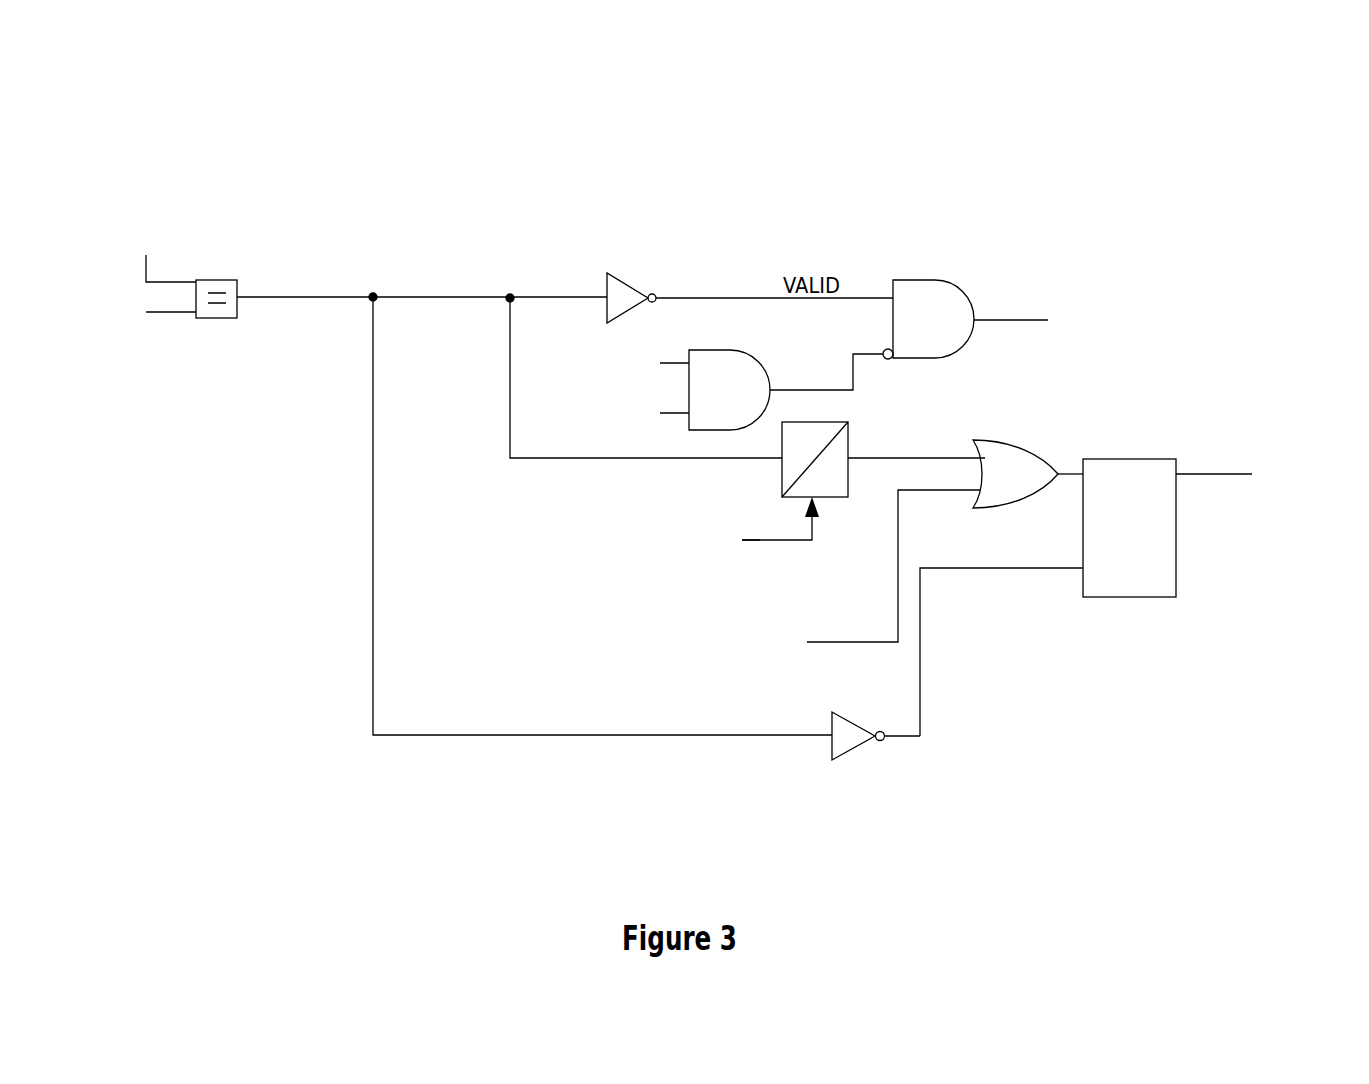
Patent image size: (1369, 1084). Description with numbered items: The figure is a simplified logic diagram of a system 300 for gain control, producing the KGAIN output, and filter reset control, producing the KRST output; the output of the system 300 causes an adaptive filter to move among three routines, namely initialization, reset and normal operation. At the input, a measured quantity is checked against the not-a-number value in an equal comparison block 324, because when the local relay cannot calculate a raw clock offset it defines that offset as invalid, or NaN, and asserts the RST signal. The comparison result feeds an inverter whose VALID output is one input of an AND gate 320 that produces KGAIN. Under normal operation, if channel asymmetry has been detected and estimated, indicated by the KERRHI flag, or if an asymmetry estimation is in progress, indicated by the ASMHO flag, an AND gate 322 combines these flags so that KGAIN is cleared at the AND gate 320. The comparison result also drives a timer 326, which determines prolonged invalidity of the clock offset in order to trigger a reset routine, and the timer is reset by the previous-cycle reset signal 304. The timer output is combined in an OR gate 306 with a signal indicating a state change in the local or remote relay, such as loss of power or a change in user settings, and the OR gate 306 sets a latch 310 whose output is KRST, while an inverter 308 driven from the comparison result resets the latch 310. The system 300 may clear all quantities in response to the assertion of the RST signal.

The system 300 is at (196, 124).
The previous reset signal RST(k-1) 304 is at (712, 555).
The OR gate 306 is at (1020, 440).
The inverter 308 is at (848, 716).
The latch L1 310 is at (1128, 458).
The AND gate 320 is at (958, 281).
The AND gate 322 is at (770, 378).
The equal comparison block 324 is at (240, 290).
The timer 326 is at (850, 432).